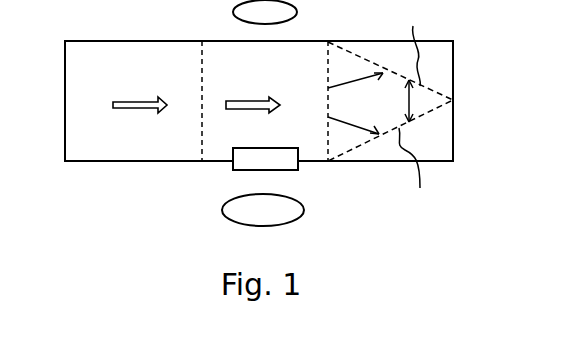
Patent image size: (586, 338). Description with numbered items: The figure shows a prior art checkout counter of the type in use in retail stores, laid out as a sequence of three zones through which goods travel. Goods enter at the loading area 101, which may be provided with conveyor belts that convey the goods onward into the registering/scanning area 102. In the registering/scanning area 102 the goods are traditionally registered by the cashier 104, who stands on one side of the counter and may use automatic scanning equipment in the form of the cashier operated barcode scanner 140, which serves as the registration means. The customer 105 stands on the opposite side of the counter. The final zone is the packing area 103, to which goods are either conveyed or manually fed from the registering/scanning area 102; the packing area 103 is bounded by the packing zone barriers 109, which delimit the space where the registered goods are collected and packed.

The loading area 101 is at (157, 101).
The registering/scanning area 102 is at (277, 101).
The packing area 103 is at (390, 101).
The cashier 104 is at (265, 12).
The customer performing registering/scanning 105 is at (263, 210).
The packing zone barriers 109 is at (417, 109).
The cashier operated barcode scanner 140 is at (265, 159).